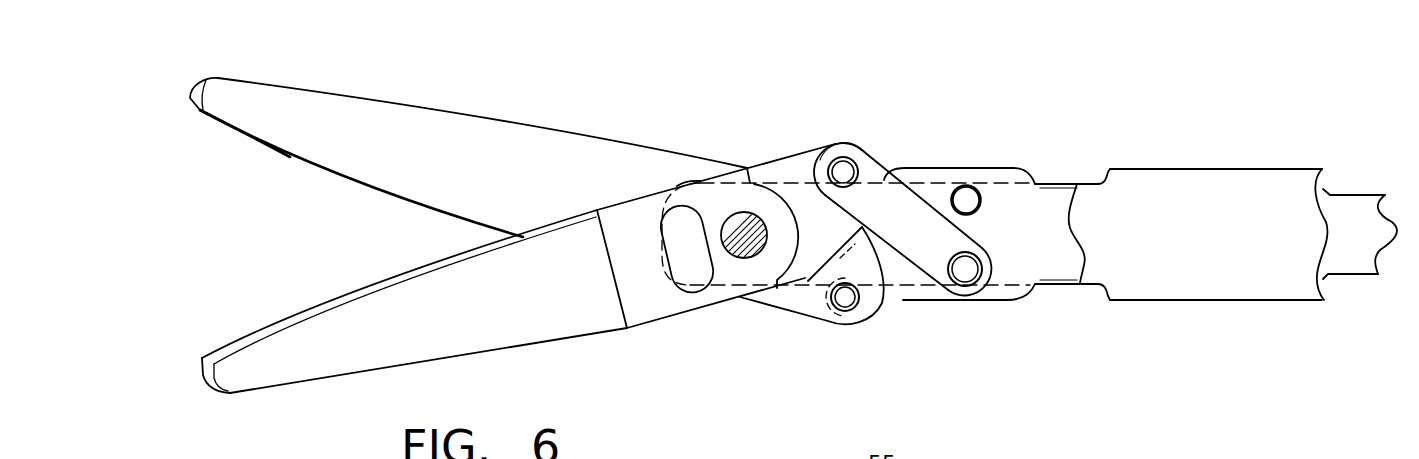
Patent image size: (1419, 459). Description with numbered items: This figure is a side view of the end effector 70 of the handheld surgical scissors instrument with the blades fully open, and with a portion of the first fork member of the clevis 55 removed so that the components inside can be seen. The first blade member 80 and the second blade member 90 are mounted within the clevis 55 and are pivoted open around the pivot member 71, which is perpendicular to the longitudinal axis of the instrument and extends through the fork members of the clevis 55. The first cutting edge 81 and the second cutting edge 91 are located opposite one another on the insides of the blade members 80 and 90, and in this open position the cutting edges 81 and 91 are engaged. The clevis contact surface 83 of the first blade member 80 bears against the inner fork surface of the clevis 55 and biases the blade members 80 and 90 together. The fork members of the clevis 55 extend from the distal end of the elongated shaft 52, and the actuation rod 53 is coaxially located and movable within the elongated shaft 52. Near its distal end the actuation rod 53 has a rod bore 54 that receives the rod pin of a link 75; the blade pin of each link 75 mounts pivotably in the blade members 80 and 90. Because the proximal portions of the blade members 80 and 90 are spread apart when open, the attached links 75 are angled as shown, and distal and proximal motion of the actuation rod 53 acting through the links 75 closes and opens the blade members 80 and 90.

The elongated shaft 52 is at (1188, 168).
The actuation rod 53 is at (980, 168).
The rod bore 54 is at (953, 198).
The clevis 55 is at (1050, 287).
The end effector 70 is at (240, 64).
The pivot member 71 is at (745, 242).
The link 75 is at (907, 262).
The first blade member 80 is at (566, 352).
The first cutting edge 81 is at (256, 328).
The clevis contact surface 83 is at (678, 238).
The second blade member 90 is at (218, 146).
The second cutting edge 91 is at (318, 167).